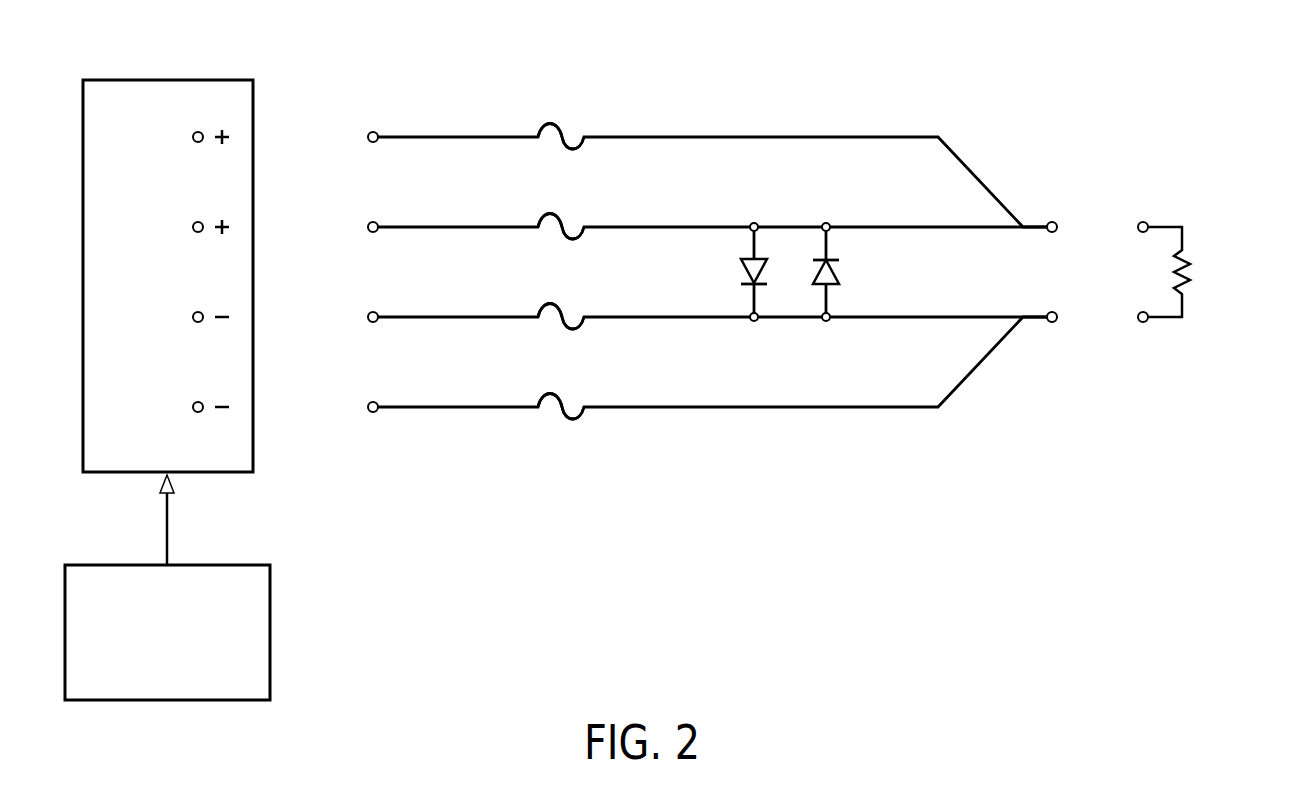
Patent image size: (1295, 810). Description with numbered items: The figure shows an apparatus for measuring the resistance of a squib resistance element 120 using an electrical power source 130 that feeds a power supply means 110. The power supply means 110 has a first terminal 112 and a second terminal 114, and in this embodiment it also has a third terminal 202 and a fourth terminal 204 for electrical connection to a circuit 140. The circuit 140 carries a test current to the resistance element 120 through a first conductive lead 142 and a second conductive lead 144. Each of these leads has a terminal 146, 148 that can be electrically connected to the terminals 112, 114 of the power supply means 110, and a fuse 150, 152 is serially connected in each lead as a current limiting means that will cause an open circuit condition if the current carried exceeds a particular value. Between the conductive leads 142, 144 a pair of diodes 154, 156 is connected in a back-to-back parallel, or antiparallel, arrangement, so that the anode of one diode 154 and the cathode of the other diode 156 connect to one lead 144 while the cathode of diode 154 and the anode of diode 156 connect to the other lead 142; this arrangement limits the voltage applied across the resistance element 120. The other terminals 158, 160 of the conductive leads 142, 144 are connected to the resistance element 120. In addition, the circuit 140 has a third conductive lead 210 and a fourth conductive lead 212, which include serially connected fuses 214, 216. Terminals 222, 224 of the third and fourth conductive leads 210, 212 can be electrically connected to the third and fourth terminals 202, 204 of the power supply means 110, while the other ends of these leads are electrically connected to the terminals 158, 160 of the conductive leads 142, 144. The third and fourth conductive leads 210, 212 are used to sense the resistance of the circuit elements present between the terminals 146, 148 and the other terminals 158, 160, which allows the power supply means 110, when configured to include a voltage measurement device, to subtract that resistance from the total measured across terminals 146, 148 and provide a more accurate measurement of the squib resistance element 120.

The power supply means 110 is at (220, 78).
The terminal 112 is at (193, 227).
The terminal 114 is at (193, 317).
The resistance element 120 is at (1186, 269).
The electrical power source 130 is at (272, 606).
The circuit 140 is at (750, 103).
The first conductive lead 142 is at (452, 226).
The second conductive lead 144 is at (452, 316).
The terminal 146 is at (366, 225).
The terminal 148 is at (366, 315).
The fuse 150 is at (572, 234).
The fuse 152 is at (572, 324).
The diode 154 is at (744, 265).
The diode 156 is at (840, 278).
The terminal 158 is at (1052, 220).
The terminal 160 is at (1054, 324).
The third terminal 202 is at (193, 137).
The fourth terminal 204 is at (193, 407).
The third conductive lead 210 is at (452, 136).
The fourth conductive lead 212 is at (452, 406).
The fuse 214 is at (568, 144).
The fuse 216 is at (572, 414).
The terminal 222 is at (366, 135).
The terminal 224 is at (366, 405).